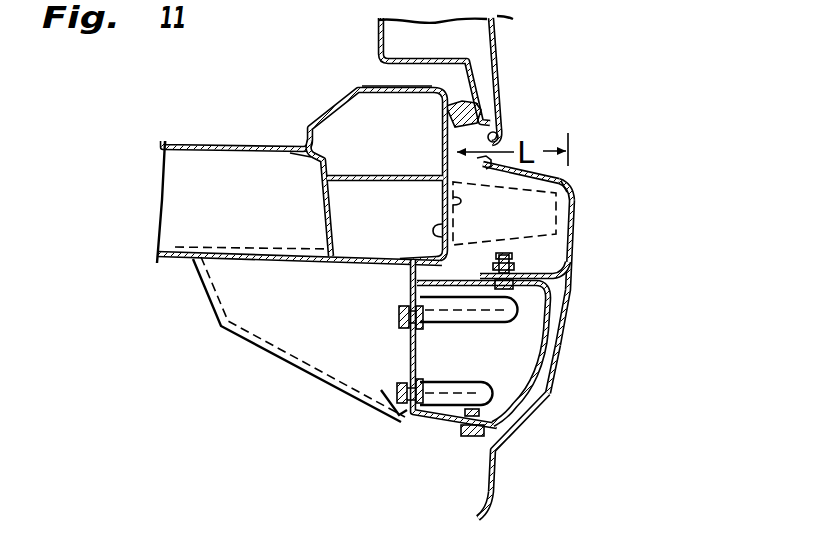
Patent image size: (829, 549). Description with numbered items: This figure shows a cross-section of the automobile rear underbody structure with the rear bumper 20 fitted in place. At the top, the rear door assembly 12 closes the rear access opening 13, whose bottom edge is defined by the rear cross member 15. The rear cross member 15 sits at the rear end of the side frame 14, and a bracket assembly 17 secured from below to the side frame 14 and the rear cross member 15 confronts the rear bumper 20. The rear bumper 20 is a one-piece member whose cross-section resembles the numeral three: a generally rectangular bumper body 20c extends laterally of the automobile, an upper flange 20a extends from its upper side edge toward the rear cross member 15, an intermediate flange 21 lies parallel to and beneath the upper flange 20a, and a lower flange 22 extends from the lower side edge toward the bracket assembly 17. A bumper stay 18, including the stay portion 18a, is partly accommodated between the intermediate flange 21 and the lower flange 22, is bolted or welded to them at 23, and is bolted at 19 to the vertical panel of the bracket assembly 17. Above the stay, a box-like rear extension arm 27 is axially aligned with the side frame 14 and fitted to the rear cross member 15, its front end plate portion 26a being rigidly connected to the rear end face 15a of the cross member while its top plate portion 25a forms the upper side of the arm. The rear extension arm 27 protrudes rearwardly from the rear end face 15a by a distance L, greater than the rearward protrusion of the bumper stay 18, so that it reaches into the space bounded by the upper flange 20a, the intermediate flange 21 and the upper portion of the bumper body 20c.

The rear door assembly 12 is at (503, 62).
The rear access opening 13 is at (403, 76).
The side frame 14 is at (179, 226).
The rear cross member 15 is at (332, 106).
The rear end face 15a is at (443, 207).
The bracket assembly 17 is at (298, 332).
The bumper stay 18 is at (434, 419).
The curved flange of bracket 18a is at (549, 372).
The bolts 19 is at (400, 318).
The rear bumper 20 is at (567, 321).
The upper flange 20a is at (566, 184).
The bumper body 20c is at (562, 349).
The intermediate flange 21 is at (568, 262).
The lower flange 22 is at (487, 432).
The bolted or welded connection 23 is at (571, 237).
The top plate portion 25a is at (572, 207).
The front end plate portion 26a is at (456, 232).
The rear extension arm 27 is at (565, 183).